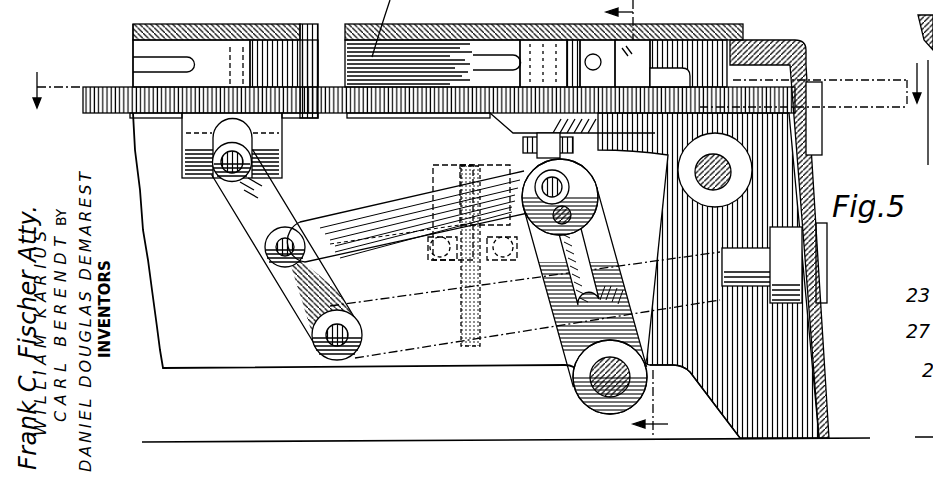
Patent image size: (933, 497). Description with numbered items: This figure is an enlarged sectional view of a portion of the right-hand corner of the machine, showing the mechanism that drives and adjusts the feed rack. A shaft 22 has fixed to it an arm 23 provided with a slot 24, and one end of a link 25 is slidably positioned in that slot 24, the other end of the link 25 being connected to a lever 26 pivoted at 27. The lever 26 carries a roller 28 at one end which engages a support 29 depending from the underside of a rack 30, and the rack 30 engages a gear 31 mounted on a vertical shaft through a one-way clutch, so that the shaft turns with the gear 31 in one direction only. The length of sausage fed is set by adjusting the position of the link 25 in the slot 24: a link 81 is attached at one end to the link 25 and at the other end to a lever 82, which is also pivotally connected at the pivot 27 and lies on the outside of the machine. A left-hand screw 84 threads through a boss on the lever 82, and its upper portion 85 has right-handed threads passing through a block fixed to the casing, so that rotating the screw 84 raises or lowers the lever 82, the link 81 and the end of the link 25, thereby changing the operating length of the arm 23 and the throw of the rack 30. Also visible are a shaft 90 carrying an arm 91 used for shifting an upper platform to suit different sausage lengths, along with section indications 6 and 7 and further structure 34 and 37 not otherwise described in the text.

The section line 6- 6 is at (474, 96).
The section line 7- 7 is at (629, 218).
The shaft 22 is at (588, 385).
The arm 23 is at (545, 262).
The slot 24 is at (558, 283).
The link 25 is at (407, 210).
The lever 26 is at (281, 210).
The pivot 27 is at (322, 350).
The roller 28 is at (225, 176).
The support 29 is at (195, 143).
The rack 30 is at (104, 116).
The gear 31 is at (545, 115).
The slide block 34 is at (423, 25).
The stop block 37 is at (593, 54).
The link 81 is at (595, 227).
The lever 82 is at (380, 308).
The left-hand screw 84 is at (463, 343).
The right-hand threaded portion 85 is at (447, 243).
The shaft 90 is at (712, 160).
The arm 91 is at (677, 112).